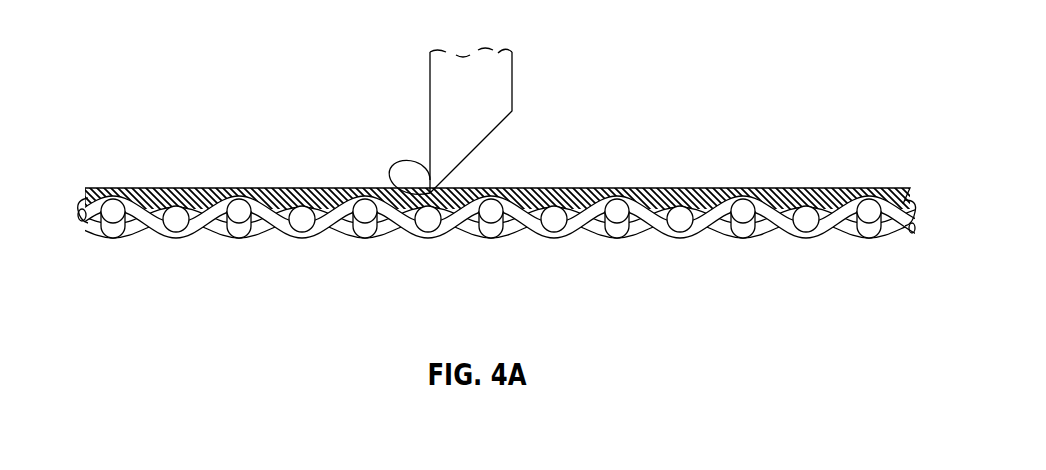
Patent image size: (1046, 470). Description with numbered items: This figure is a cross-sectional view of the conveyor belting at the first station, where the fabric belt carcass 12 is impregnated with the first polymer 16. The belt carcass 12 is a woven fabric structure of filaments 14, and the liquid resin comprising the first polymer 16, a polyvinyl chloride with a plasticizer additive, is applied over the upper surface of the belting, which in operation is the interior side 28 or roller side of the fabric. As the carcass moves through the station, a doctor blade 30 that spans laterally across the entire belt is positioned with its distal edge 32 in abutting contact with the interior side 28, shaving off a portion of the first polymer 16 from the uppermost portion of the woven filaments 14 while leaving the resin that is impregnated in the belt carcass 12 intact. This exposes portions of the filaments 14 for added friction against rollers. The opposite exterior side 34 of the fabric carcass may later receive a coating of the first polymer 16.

The belt carcass 12 is at (194, 214).
The filaments 14 is at (680, 197).
The first polymer 16 is at (320, 195).
The interior side 28 is at (593, 162).
The doctor blade 30 is at (440, 80).
The distal edge 32 is at (430, 193).
The exterior side 34 is at (628, 261).